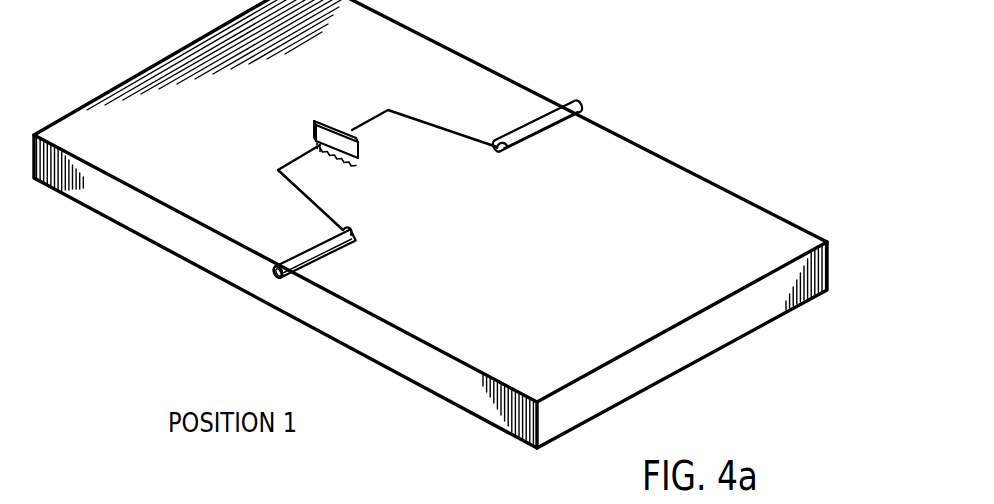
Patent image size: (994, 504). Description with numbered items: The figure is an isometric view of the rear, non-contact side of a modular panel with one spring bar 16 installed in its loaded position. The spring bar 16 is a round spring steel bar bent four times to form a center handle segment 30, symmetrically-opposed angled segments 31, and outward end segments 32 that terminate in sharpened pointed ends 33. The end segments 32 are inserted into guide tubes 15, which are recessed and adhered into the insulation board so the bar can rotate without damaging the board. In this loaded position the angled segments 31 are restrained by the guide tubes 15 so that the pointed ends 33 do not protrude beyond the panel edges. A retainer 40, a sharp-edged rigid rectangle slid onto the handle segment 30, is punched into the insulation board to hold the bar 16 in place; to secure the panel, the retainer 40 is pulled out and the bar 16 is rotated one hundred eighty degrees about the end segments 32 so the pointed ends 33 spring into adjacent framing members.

The guide tube 15 is at (542, 125).
The spring bar 16 is at (293, 162).
The center handle segment 30 is at (357, 124).
The angled segment 31 is at (422, 122).
The outward end segment 32 is at (498, 148).
The pointed end 33 is at (276, 284).
The retainer 40 is at (330, 120).